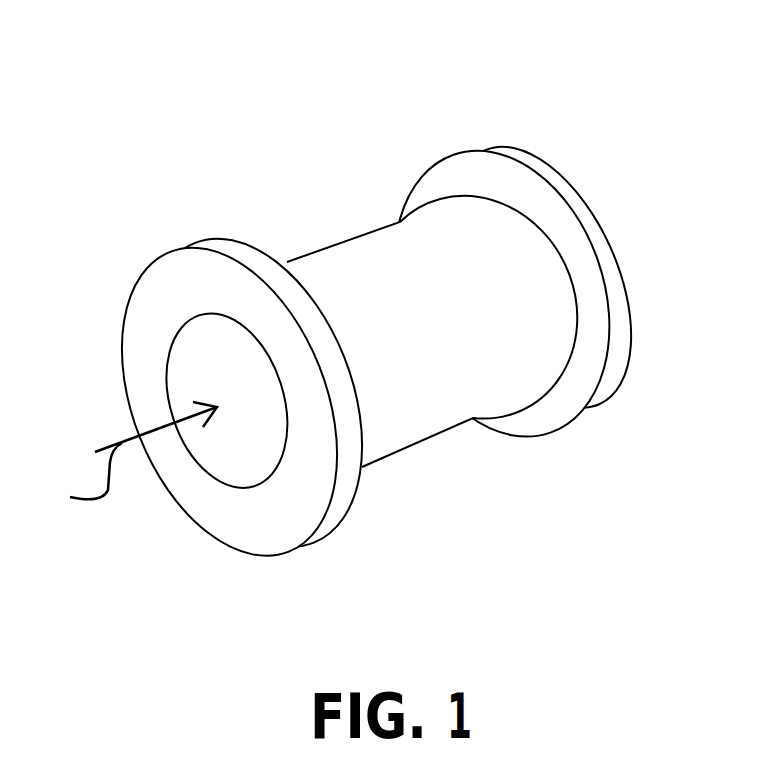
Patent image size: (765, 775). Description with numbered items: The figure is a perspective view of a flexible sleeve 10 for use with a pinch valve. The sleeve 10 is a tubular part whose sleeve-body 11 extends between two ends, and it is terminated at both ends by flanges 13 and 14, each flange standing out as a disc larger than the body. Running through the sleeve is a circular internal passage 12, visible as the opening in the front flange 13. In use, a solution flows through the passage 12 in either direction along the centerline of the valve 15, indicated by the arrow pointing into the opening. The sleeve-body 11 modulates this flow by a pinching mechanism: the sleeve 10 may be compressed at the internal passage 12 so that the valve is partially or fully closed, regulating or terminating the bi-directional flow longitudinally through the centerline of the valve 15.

The flexible sleeve 10 is at (365, 309).
The sleeve-body 11 is at (421, 350).
The circular internal passage 12 is at (247, 447).
The flange 13 is at (148, 303).
The flange 14 is at (501, 150).
The centerline of the valve 15 is at (129, 456).